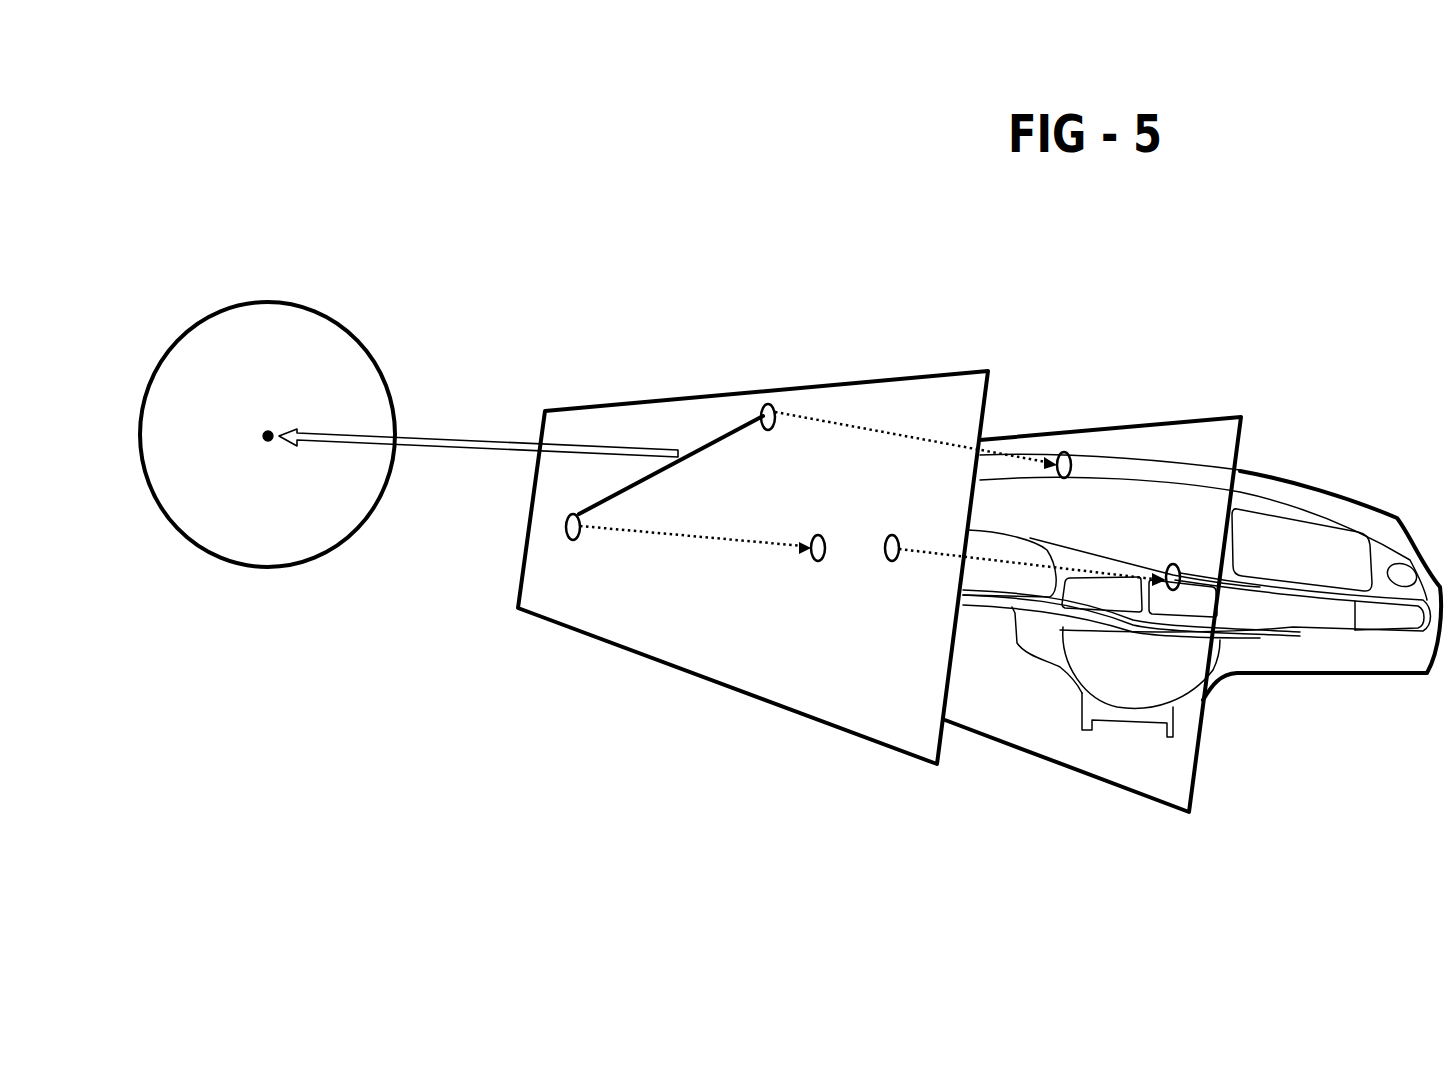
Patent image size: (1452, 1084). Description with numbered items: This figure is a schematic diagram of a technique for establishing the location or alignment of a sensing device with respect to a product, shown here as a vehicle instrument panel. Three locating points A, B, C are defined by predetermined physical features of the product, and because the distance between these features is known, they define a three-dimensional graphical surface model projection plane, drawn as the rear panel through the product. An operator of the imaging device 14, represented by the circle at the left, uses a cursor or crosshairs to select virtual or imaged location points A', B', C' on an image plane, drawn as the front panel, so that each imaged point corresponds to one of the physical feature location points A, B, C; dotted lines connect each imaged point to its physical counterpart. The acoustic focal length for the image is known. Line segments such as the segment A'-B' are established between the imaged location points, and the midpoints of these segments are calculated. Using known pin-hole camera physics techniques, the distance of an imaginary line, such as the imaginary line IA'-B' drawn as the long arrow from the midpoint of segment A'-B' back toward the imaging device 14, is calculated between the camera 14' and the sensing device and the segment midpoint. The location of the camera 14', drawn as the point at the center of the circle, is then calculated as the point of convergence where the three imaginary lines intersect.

The imaging device 14 is at (273, 398).
The camera 14' is at (207, 370).
The imaginary line IA'-B' is at (478, 401).
The line segment A'-B' is at (671, 430).
The imaged location point A' is at (530, 511).
The imaged location point B' is at (786, 373).
The imaged location point C' is at (876, 598).
The locating point A is at (702, 582).
The locating point B is at (940, 421).
The locating point C is at (1039, 541).